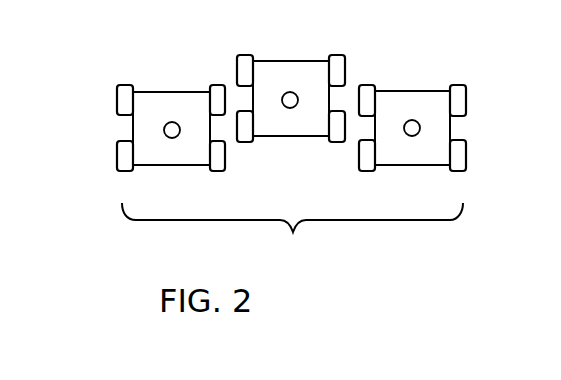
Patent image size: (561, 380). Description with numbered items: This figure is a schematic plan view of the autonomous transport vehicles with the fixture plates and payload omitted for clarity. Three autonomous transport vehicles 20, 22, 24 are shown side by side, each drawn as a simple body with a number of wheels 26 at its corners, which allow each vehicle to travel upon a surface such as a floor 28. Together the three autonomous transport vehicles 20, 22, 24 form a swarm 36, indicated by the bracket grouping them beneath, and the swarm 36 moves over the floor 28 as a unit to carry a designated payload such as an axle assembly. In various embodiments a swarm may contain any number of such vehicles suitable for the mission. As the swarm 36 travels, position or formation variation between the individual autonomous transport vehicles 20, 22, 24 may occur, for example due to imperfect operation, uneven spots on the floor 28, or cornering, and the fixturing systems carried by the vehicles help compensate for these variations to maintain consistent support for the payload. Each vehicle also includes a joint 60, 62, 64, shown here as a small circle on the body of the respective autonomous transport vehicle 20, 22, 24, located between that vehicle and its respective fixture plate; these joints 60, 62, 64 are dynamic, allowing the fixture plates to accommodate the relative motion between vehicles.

The autonomous transport vehicle 20 is at (167, 115).
The autonomous transport vehicle 22 is at (319, 85).
The autonomous transport vehicle 24 is at (439, 115).
The wheels 26 is at (117, 98).
The floor 28 is at (187, 55).
The swarm 36 is at (292, 234).
The joint 60 is at (173, 138).
The joint 62 is at (290, 108).
The joint 64 is at (409, 120).